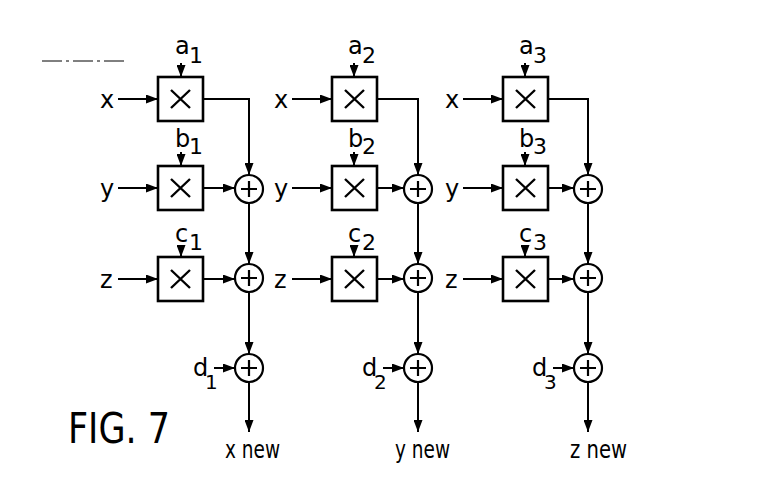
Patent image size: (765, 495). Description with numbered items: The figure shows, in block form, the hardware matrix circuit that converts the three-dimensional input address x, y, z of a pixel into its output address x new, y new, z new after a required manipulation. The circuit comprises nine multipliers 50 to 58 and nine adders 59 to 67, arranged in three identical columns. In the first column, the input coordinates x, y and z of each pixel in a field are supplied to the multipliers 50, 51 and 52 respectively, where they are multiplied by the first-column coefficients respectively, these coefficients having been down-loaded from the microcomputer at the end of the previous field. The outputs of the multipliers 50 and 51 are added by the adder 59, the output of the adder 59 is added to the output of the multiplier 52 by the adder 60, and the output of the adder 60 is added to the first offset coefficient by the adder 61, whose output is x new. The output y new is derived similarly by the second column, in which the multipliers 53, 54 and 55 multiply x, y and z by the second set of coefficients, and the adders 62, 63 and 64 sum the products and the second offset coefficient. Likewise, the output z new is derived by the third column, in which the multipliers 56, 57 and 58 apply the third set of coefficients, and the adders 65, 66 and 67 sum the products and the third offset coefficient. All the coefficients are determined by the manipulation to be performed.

The multiplier 50 is at (203, 80).
The multiplier 51 is at (203, 169).
The multiplier 52 is at (203, 260).
The multiplier 53 is at (377, 80).
The multiplier 54 is at (377, 169).
The multiplier 55 is at (377, 260).
The multiplier 56 is at (548, 80).
The multiplier 57 is at (548, 169).
The multiplier 58 is at (548, 260).
The adder 59 is at (259, 179).
The adder 60 is at (259, 268).
The adder 61 is at (259, 358).
The adder 62 is at (428, 179).
The adder 63 is at (428, 268).
The adder 64 is at (428, 358).
The adder 65 is at (598, 179).
The adder 66 is at (598, 268).
The adder 67 is at (598, 358).